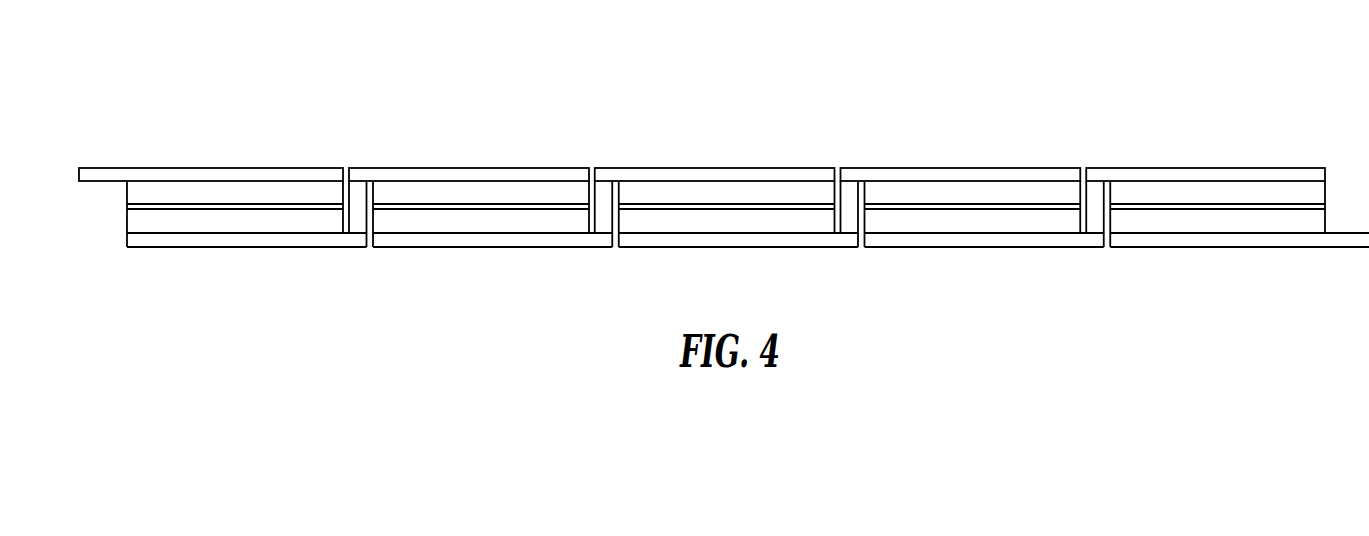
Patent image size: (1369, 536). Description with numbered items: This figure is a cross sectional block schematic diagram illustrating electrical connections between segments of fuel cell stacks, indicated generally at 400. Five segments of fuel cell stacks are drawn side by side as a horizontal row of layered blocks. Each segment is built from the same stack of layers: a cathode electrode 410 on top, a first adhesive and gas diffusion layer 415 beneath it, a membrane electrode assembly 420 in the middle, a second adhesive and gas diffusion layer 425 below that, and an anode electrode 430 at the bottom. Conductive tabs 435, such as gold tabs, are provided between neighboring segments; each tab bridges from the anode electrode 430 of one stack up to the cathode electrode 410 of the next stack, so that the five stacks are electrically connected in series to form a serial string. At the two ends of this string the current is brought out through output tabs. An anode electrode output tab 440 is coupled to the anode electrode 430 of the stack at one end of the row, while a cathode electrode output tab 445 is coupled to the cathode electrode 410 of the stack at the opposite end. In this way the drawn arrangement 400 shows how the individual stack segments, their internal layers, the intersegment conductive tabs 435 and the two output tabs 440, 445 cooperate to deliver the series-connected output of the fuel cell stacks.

The electrical connections between segments of fuel cell stacks 400 is at (1235, 50).
The cathode electrode 410 is at (395, 171).
The first adhesive and gas diffusion layer 415 is at (483, 192).
The membrane electrode assembly 420 is at (462, 206).
The second adhesive and gas diffusion layer 425 is at (532, 227).
The anode electrode 430 is at (458, 237).
The conductive tabs 435 is at (851, 223).
The anode electrode output tab 440 is at (1353, 245).
The cathode electrode output tab 445 is at (92, 168).